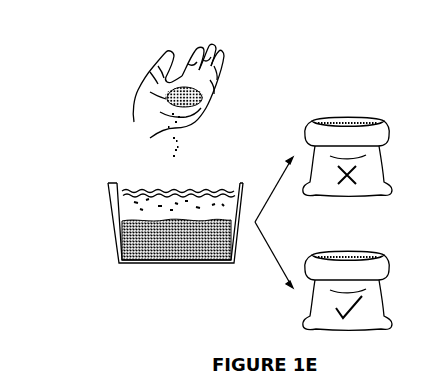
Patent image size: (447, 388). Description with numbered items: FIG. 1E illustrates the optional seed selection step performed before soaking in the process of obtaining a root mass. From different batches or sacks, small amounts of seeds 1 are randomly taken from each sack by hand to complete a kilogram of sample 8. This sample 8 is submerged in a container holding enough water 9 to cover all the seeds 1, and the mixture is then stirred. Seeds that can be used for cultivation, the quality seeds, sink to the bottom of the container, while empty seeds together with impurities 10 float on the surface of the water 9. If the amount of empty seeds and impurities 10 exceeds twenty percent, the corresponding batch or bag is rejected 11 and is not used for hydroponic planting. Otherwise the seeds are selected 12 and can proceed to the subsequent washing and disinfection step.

The seeds 1 is at (128, 242).
The sample 8 is at (160, 105).
The water 9 is at (127, 195).
The empty seeds and impurities 10 is at (132, 208).
The rejected batch or bag 11 is at (348, 118).
The selected seeds 12 is at (348, 252).